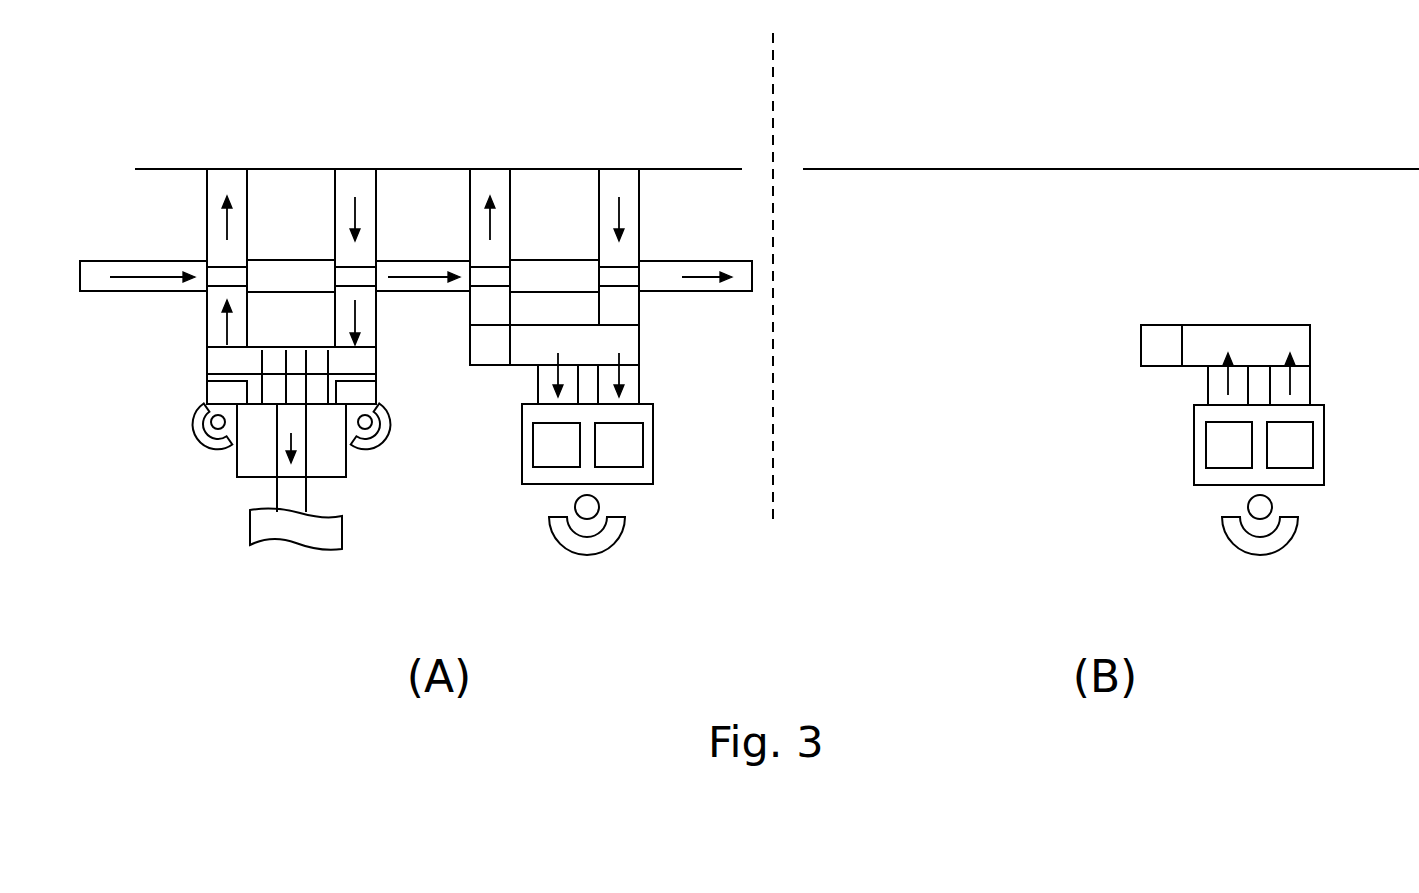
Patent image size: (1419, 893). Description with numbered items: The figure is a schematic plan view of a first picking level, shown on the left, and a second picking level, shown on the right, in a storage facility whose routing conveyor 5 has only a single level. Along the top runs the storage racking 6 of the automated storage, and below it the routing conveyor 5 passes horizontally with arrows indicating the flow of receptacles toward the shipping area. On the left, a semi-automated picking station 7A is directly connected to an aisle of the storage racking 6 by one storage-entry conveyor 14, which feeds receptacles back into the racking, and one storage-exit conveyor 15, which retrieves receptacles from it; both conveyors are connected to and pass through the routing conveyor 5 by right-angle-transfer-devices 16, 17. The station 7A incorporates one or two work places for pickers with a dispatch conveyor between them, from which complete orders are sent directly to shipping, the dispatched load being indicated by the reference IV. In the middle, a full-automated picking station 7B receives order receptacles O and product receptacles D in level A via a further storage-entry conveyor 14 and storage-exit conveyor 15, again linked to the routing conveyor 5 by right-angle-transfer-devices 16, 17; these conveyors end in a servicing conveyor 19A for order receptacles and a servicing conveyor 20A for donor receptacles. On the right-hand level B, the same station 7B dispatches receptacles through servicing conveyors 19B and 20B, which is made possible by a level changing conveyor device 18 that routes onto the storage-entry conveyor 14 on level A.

The routing conveyor 5 is at (95, 273).
The storage racking 6 is at (398, 57).
The storage-entry conveyor 14 is at (228, 180).
The storage-exit conveyor 15 is at (355, 180).
The right-angle-transfer-device 16 is at (216, 281).
The right-angle-transfer-device 17 is at (342, 277).
The level changing conveyor device 18 is at (490, 348).
The servicing conveyor for order receptacles 19A is at (570, 375).
The servicing conveyor for product receptacles 20A is at (625, 400).
The servicing conveyor for order receptacles 19B is at (1240, 383).
The servicing conveyor for product receptacles 20B is at (1297, 400).
The semi-automated picking station 7A is at (370, 466).
The full-automated picking station 7B is at (652, 499).
The section line IV is at (296, 530).